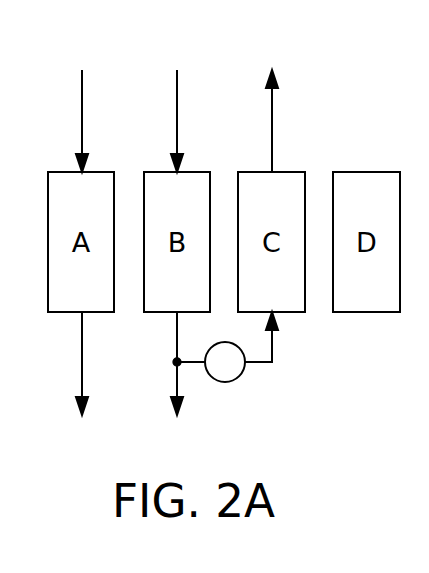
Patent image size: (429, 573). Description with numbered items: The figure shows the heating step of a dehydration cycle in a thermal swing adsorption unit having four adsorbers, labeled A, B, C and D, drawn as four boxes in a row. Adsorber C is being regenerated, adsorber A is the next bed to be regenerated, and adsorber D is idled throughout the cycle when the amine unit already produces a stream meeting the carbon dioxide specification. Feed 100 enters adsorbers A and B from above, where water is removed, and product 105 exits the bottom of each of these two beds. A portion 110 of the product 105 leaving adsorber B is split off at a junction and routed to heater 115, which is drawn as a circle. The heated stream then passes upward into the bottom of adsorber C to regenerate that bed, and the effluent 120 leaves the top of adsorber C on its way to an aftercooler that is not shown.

The feed 100 is at (81, 79).
The product 105 is at (80, 376).
The portion of product 110 is at (176, 357).
The heater 115 is at (225, 383).
The effluent 120 is at (270, 98).